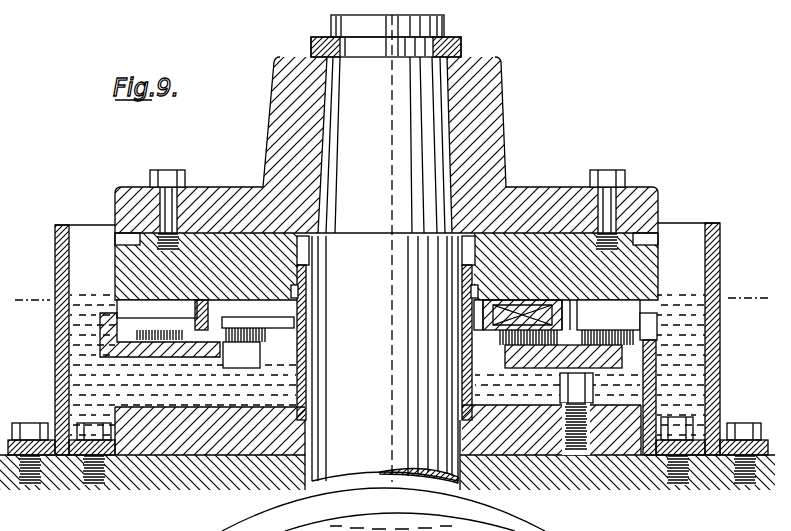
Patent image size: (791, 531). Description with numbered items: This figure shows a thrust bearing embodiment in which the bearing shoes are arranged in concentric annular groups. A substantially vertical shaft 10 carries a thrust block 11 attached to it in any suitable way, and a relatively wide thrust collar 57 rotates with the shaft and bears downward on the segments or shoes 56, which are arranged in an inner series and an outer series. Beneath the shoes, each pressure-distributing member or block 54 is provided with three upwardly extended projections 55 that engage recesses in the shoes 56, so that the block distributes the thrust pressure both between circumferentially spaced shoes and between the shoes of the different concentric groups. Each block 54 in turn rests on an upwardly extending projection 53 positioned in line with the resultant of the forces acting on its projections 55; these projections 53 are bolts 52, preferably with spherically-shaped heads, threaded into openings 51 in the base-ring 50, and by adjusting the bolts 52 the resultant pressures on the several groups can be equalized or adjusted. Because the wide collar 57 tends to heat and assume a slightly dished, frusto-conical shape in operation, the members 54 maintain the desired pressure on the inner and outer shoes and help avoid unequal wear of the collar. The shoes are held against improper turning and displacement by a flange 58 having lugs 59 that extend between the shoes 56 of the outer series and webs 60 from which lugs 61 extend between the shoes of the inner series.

The vertical shaft 10 is at (332, 455).
The thrust block 11 is at (497, 147).
The base-ring 50 is at (157, 440).
The openings 51 is at (586, 456).
The bolts 52 is at (575, 437).
The projection 53 is at (645, 372).
The pressure-distributing member 54 is at (670, 346).
The upwardly extended projections 55 is at (462, 337).
The segments or shoes 56 is at (615, 317).
The thrust collar 57 is at (115, 267).
The flange 58 is at (56, 352).
The lugs 59 is at (116, 317).
The webs 60 is at (147, 352).
The lugs 61 is at (300, 296).